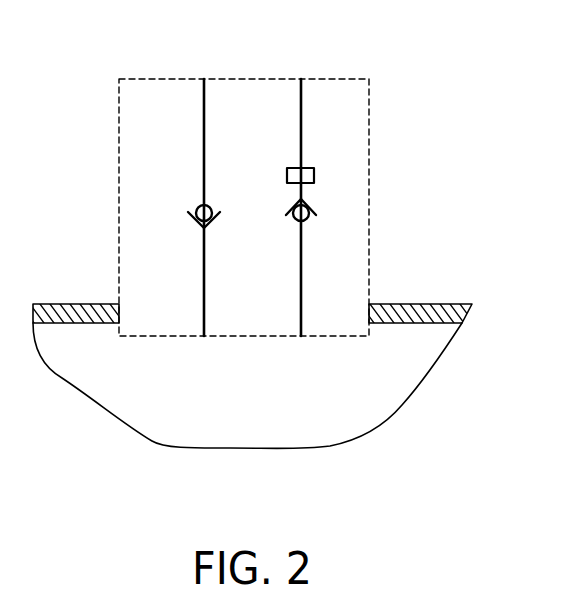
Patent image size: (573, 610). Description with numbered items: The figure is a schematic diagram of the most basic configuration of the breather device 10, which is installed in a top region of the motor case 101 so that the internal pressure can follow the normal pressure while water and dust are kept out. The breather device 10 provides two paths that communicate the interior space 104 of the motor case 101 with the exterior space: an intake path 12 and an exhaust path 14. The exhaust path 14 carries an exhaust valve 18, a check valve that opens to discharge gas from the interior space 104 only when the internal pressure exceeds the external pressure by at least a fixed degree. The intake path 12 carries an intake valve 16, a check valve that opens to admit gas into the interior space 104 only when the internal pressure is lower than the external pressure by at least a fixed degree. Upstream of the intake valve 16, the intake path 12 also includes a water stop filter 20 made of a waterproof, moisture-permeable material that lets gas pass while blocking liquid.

The breather device 10 is at (352, 78).
The intake path 12 is at (303, 123).
The exhaust path 14 is at (203, 148).
The intake valve 16 is at (317, 207).
The exhaust valve 18 is at (198, 220).
The water stop filter 20 is at (316, 173).
The motor case 101 is at (445, 302).
The interior space 104 is at (270, 390).